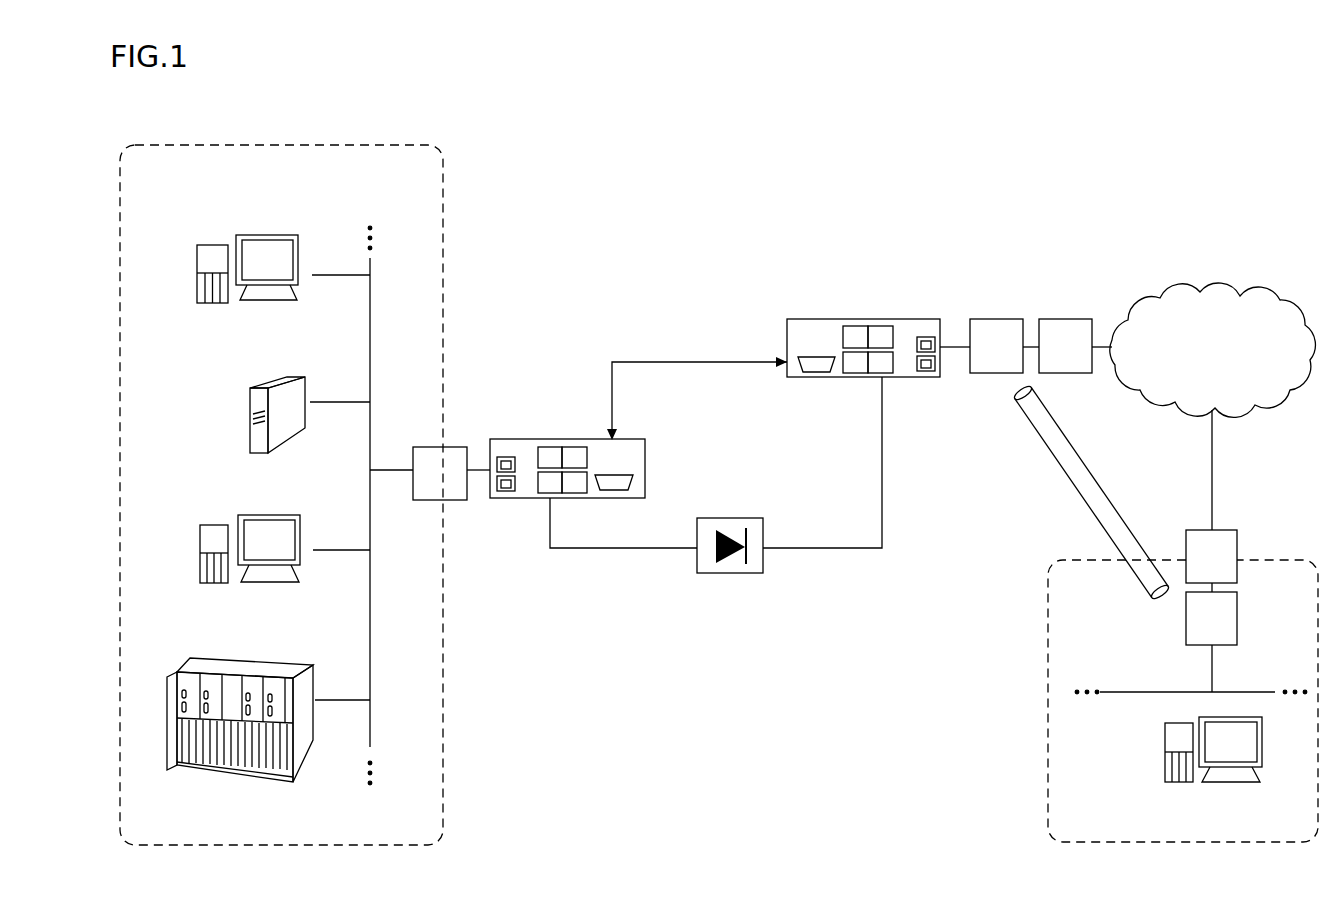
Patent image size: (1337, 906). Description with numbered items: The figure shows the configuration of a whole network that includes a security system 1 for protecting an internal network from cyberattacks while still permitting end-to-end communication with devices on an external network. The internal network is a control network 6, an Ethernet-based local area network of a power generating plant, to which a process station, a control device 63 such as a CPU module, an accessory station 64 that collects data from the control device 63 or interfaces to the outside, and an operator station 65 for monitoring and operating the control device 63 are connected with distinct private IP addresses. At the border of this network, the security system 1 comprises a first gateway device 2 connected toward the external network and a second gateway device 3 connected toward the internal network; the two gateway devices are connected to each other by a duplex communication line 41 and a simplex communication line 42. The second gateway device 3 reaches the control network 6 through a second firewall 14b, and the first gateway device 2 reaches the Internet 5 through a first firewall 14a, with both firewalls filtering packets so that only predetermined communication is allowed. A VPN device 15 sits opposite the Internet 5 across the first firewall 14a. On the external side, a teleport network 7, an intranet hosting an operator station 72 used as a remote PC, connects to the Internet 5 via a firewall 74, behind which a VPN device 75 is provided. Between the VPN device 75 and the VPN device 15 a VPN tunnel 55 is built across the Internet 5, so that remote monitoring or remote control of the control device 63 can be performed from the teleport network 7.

The security system 1 is at (896, 165).
The first gateway device 2 is at (848, 319).
The second gateway device 3 is at (543, 439).
The Internet 5 is at (1187, 293).
The control network 6 is at (307, 145).
The teleport network 7 is at (1048, 778).
The first firewall 14a is at (1063, 318).
The second firewall 14b is at (452, 447).
The VPN device 15 is at (992, 318).
The duplex communication line 41 is at (677, 362).
The simplex communication line 42 is at (795, 548).
The VPN tunnel 55 is at (1082, 498).
The control device 63 is at (198, 525).
The accessory station 64 is at (248, 410).
The operator station 65 is at (212, 245).
The operator station 72 is at (1163, 763).
The firewall 74 is at (1238, 535).
The VPN device 75 is at (1238, 618).